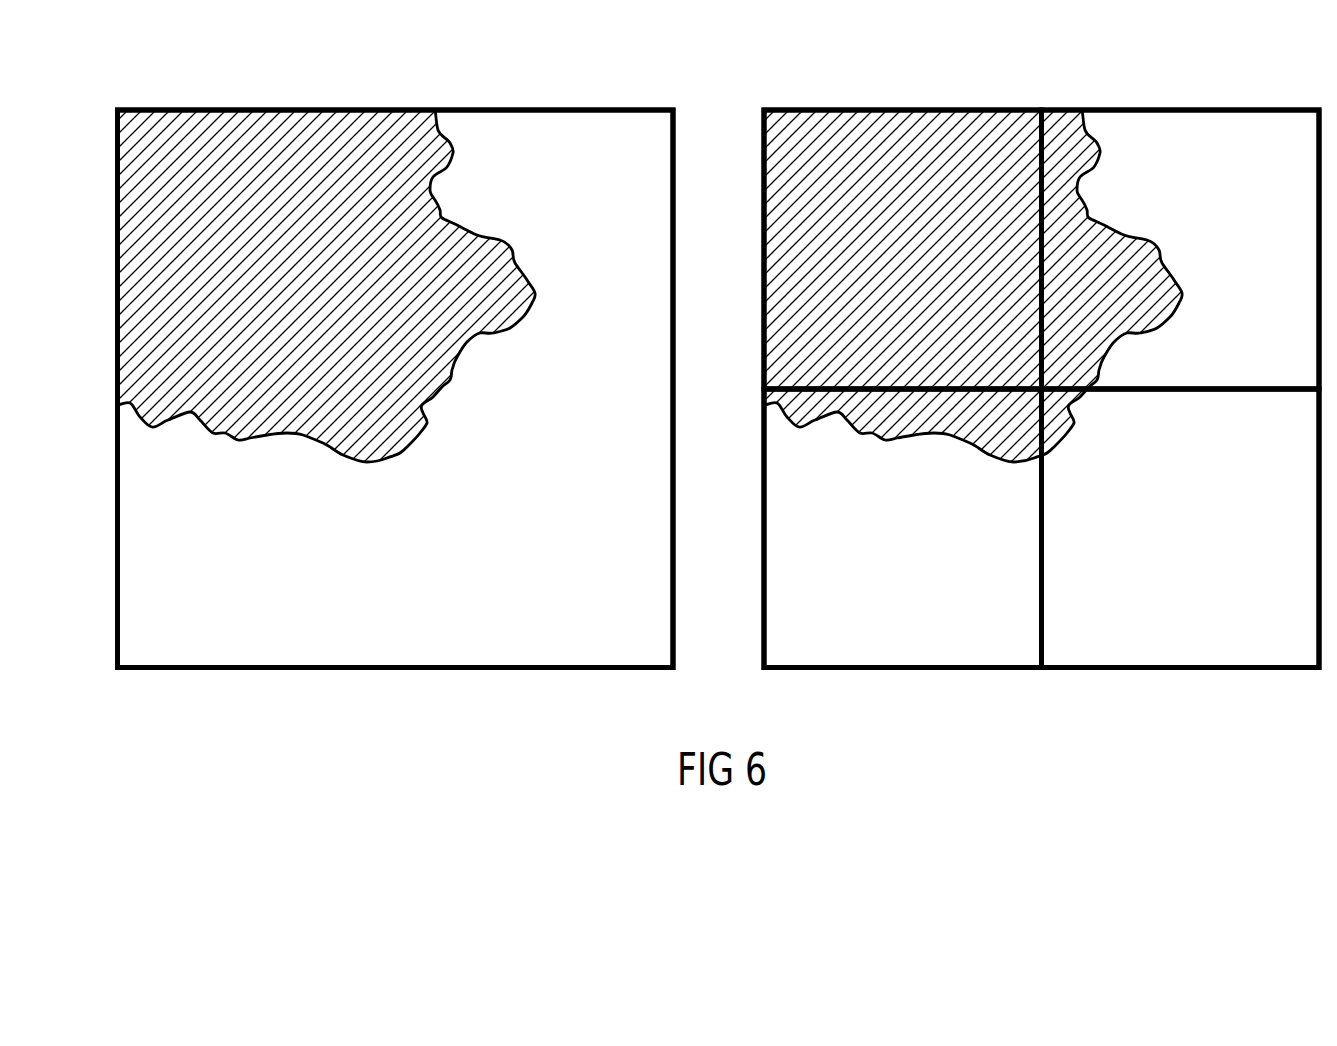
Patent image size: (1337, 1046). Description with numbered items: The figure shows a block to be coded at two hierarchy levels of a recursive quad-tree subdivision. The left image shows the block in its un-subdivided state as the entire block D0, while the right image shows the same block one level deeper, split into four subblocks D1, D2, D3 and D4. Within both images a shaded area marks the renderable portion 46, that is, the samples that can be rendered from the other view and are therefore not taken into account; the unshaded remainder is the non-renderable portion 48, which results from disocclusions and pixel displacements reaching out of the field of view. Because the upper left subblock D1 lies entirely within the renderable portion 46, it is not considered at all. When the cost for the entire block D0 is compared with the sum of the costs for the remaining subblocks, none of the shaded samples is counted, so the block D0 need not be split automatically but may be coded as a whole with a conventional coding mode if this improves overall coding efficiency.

The renderable portion 46 is at (250, 143).
The non-renderable portion 48 is at (582, 142).
The entire block D0 is at (396, 389).
The upper left subblock D1 is at (903, 249).
The upper right subblock D2 is at (1181, 249).
The lower left subblock D3 is at (903, 528).
The lower right subblock D4 is at (1181, 528).